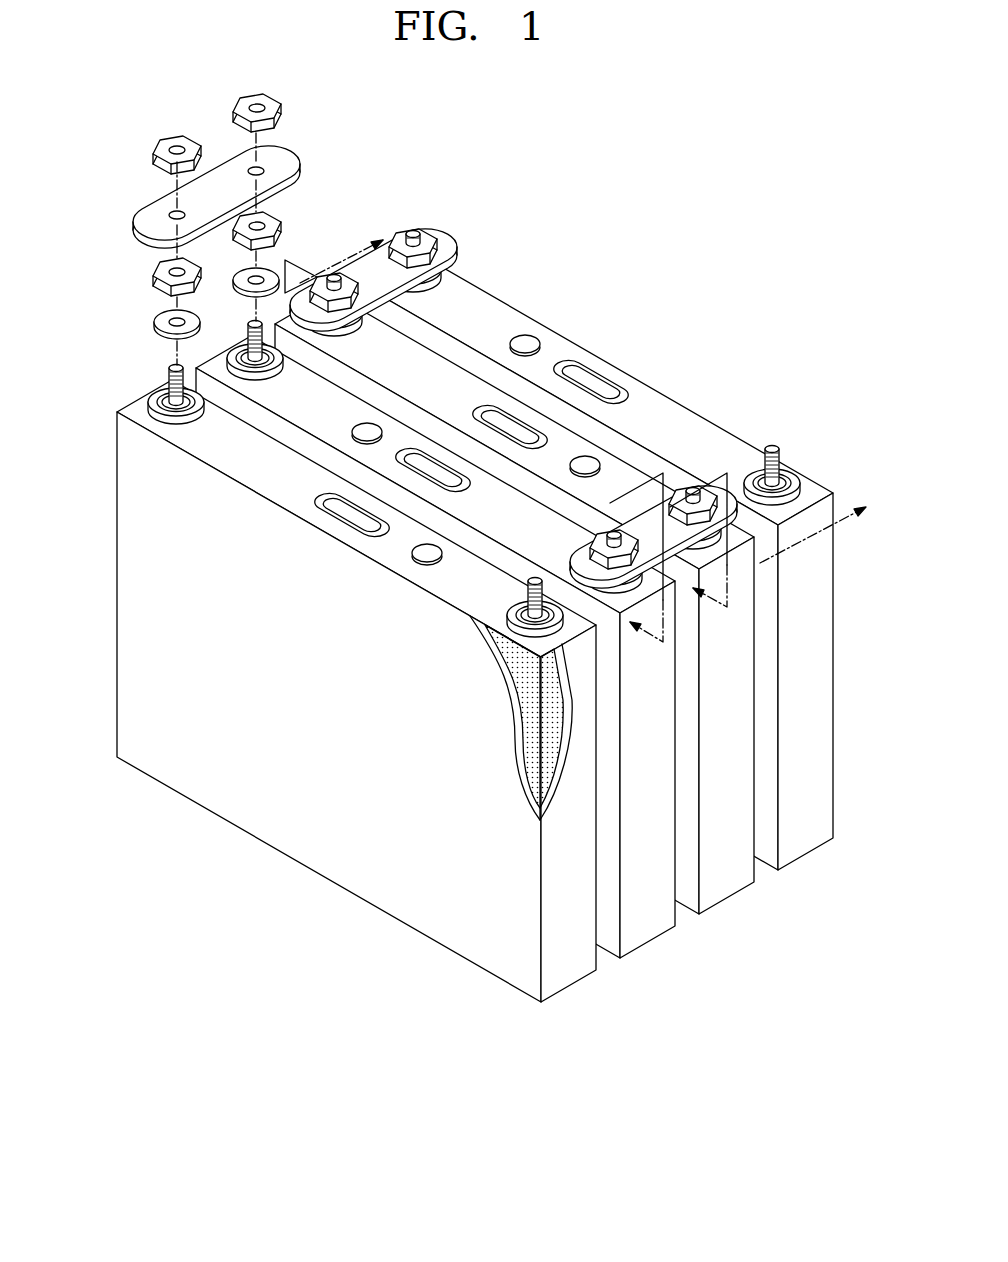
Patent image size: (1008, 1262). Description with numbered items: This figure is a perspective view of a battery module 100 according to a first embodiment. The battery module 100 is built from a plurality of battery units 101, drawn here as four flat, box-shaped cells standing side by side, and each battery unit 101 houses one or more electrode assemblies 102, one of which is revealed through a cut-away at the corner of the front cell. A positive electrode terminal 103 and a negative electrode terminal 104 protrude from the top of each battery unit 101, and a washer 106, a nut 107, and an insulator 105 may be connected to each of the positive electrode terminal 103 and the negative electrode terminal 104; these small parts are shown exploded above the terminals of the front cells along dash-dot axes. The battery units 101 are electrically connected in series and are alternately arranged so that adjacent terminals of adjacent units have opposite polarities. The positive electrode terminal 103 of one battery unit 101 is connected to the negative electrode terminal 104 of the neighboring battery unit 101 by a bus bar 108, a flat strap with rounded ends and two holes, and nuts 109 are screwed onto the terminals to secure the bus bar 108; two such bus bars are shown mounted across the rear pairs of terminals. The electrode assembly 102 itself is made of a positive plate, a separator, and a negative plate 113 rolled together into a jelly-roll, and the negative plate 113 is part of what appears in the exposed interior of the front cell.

The battery module 100 is at (466, 603).
The battery unit 101 is at (660, 945).
The electrode assembly 102 is at (533, 752).
The positive electrode terminal 103 is at (773, 445).
The negative electrode terminal 104 is at (696, 497).
The insulator 105 is at (150, 400).
The washer 106 is at (152, 322).
The nut 107 is at (153, 272).
The bus bar 108 is at (152, 218).
The nut 109 is at (153, 148).
The negative plate 113 is at (422, 562).